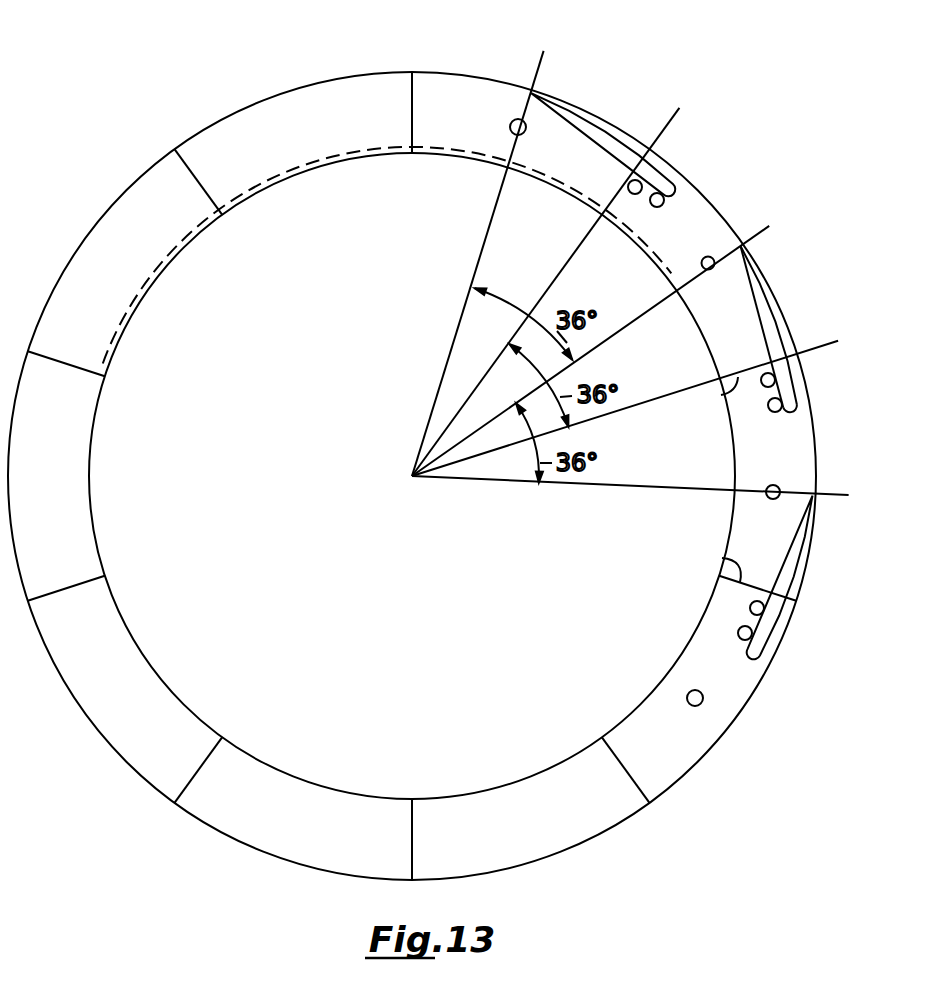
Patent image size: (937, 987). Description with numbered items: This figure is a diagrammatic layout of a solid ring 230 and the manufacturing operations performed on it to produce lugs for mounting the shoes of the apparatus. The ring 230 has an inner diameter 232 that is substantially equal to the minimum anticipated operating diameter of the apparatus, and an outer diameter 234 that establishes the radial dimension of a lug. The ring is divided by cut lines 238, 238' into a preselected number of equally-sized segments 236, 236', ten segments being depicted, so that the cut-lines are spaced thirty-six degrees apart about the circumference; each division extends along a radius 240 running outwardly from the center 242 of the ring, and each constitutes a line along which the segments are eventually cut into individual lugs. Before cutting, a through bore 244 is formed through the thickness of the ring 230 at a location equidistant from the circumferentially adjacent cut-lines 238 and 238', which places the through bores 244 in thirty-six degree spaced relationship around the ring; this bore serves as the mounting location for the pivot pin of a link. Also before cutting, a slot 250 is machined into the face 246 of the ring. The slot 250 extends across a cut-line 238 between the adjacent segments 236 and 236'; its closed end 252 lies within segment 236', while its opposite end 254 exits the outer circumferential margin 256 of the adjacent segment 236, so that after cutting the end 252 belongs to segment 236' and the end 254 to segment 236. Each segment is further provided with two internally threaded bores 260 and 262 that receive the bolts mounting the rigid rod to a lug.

The ring 230 is at (462, 77).
The inner diameter 232 is at (303, 176).
The outer diameter 234 is at (336, 80).
The segment 236 is at (740, 222).
The segment 236' is at (801, 514).
The cut line 238 is at (695, 412).
The cut line 238' is at (691, 563).
The radius 240 is at (668, 393).
The center 242 is at (412, 476).
The through bore 244 is at (770, 500).
The face 246 is at (300, 152).
The slot 250 is at (807, 329).
The closed end 252 is at (808, 392).
The opposite end 254 is at (757, 275).
The outer circumferential margin 256 is at (780, 309).
The internally threaded bore 260 is at (766, 370).
The internally threaded bore 262 is at (778, 413).